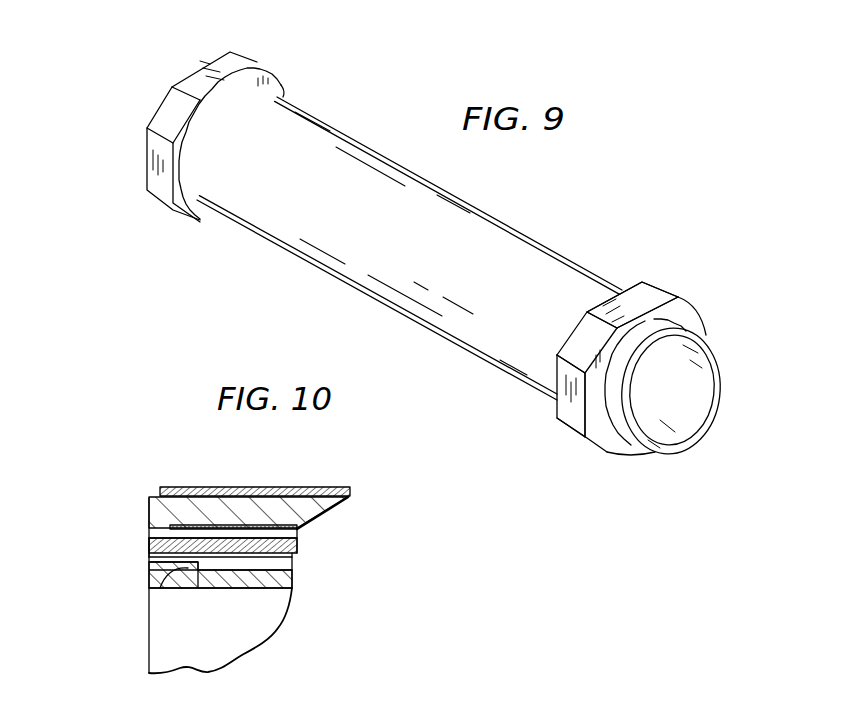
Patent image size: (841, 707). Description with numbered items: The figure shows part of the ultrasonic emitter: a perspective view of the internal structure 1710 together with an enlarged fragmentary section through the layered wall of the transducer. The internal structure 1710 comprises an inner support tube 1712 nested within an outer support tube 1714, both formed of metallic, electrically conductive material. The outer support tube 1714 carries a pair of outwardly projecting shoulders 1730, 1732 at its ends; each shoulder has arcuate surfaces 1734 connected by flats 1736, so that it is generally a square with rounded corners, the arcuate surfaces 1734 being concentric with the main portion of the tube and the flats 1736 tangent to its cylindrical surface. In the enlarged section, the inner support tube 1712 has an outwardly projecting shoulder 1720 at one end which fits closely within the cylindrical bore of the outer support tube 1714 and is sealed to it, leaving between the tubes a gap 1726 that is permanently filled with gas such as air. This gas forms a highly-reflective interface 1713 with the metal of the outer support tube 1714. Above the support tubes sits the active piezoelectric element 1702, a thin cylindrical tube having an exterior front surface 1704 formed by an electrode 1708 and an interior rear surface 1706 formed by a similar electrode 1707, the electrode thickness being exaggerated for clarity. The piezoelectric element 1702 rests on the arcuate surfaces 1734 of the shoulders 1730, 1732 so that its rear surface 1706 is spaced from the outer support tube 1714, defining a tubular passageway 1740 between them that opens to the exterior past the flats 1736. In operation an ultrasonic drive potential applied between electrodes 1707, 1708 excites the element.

In FIG. 9, the internal structure 1710 is at (208, 5).
In FIG. 9, the inner support tube 1712 is at (670, 318).
In FIG. 10, the inner support tube 1712 is at (178, 596).
In FIG. 9, the outer support tube 1714 is at (541, 268).
In FIG. 10, the outer support tube 1714 is at (138, 546).
In FIG. 9, the shoulder 1730 is at (266, 49).
In FIG. 9, the shoulder 1732 is at (682, 290).
In FIG. 9, the arcuate surfaces 1734 is at (582, 343).
In FIG. 9, the flats 1736 is at (652, 294).
In FIG. 10, the piezoelectric element 1702 is at (149, 515).
In FIG. 10, the front surface 1704 is at (315, 485).
In FIG. 10, the rear surface 1706 is at (307, 529).
In FIG. 10, the electrode 1707 is at (208, 520).
In FIG. 10, the electrode 1708 is at (190, 487).
In FIG. 10, the highly-reflective interface 1713 is at (297, 548).
In FIG. 10, the shoulder 1720 is at (147, 583).
In FIG. 10, the gap 1726 is at (263, 562).
In FIG. 10, the tubular passageway 1740 is at (258, 532).